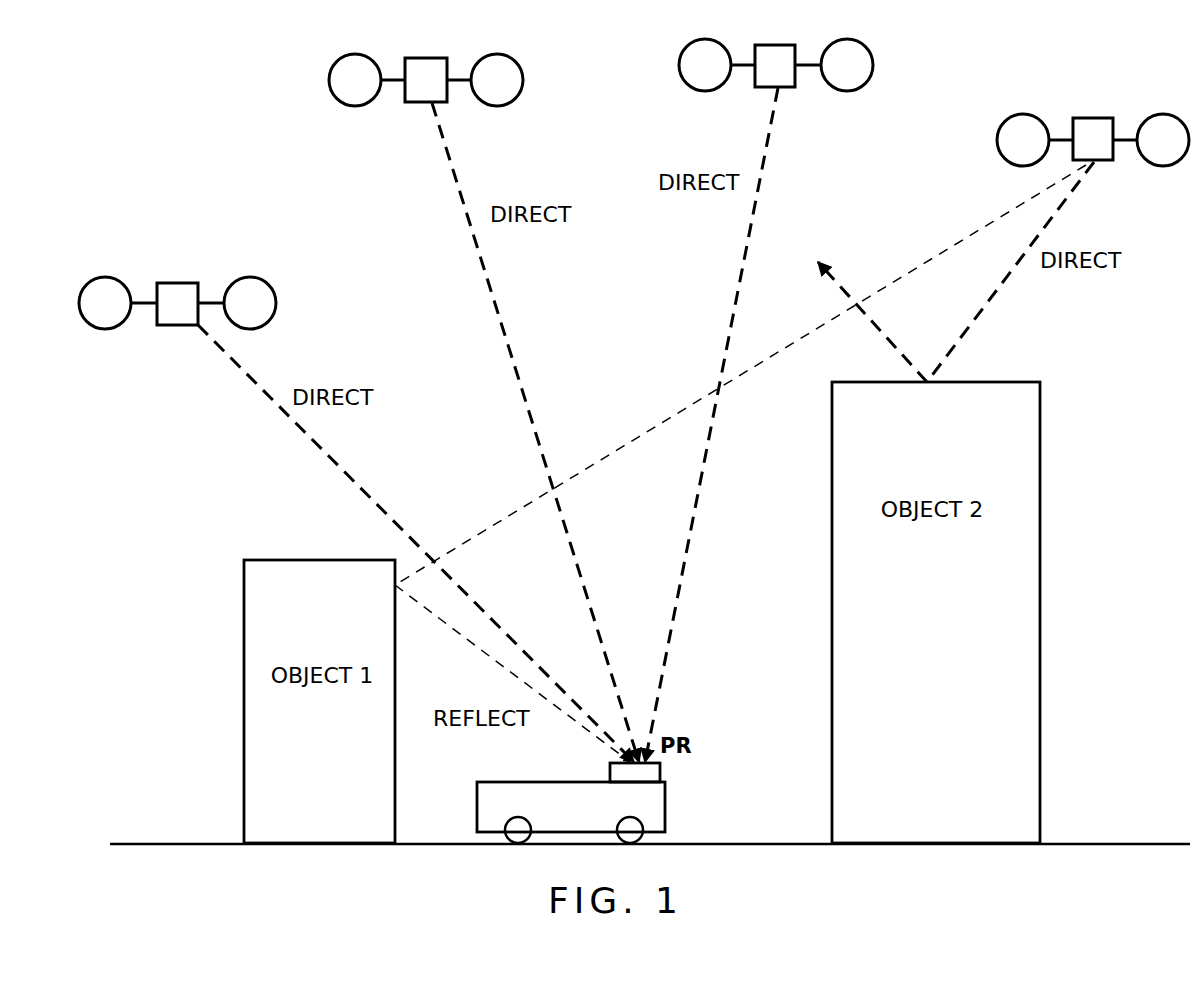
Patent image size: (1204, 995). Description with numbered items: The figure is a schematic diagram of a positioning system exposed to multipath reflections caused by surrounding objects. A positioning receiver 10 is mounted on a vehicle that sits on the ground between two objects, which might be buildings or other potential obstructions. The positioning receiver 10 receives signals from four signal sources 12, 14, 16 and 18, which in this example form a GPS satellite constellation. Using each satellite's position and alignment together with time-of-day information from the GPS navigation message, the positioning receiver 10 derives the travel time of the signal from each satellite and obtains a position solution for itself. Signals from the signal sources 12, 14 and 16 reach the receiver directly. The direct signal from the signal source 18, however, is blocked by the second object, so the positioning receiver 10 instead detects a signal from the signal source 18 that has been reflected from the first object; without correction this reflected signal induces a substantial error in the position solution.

The positioning receiver 10 is at (662, 772).
The signal source 12 is at (177, 291).
The signal source 14 is at (426, 68).
The signal source 16 is at (776, 53).
The signal source 18 is at (1093, 128).